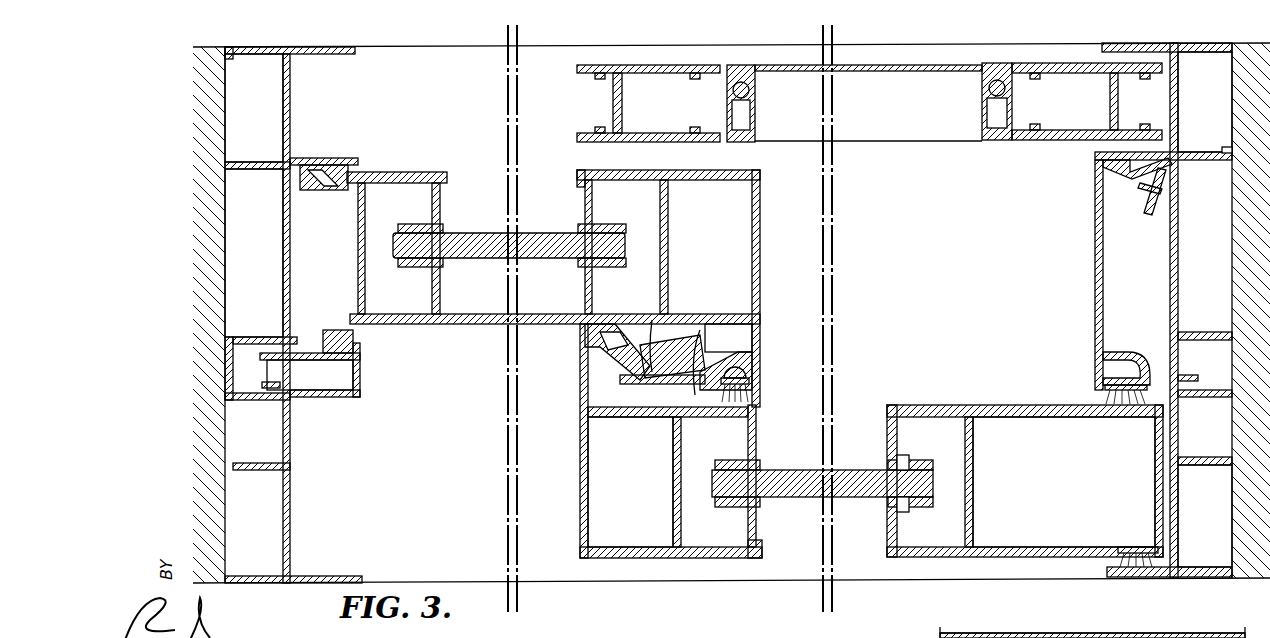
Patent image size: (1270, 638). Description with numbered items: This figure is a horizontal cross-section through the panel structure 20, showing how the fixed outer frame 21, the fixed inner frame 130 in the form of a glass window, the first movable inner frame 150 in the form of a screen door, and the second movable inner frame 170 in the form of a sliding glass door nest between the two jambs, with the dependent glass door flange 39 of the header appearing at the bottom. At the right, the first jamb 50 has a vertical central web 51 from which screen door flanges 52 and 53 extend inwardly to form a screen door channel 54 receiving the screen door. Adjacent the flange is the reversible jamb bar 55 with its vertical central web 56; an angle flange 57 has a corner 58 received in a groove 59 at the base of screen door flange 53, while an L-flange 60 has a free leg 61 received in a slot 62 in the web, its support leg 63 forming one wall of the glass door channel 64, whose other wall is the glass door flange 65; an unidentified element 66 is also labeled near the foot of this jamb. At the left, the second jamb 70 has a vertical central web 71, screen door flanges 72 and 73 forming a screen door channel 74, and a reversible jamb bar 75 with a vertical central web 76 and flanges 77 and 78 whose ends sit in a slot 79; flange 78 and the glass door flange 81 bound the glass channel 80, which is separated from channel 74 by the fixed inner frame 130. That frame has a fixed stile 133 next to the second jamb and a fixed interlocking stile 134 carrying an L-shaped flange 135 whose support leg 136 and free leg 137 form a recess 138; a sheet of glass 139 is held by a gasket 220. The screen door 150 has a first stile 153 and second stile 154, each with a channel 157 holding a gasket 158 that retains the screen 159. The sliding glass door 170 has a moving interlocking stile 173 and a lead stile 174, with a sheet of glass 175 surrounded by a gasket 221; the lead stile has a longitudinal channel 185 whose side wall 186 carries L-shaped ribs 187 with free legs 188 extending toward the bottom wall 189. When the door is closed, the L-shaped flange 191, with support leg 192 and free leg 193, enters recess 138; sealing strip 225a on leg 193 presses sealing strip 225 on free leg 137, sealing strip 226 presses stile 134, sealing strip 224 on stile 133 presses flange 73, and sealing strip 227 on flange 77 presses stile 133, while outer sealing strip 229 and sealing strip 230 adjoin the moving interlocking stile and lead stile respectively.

The panel structure 20 is at (172, 57).
The fixed outer frame 21 is at (212, 110).
The dependent glass door flange 39 is at (1055, 633).
The first jamb 50 is at (1225, 580).
The vertical central web 51 is at (1178, 268).
The screen door flange 52 is at (1143, 47).
The screen door flange 53 is at (1122, 156).
The screen door channel 54 is at (1155, 110).
The reversible jamb bar 55 is at (1093, 278).
The vertical central web 56 is at (1102, 250).
The angle flange 57 is at (1162, 190).
The corner 58 is at (1172, 170).
The groove 59 is at (1183, 155).
The L-flange 60 is at (1160, 358).
The free leg 61 is at (1180, 366).
The slot 62 is at (1190, 340).
The support leg 63 is at (1180, 402).
The glass door channel 64 is at (1172, 513).
The glass door flange 65 is at (1117, 579).
The sill flange 66 is at (1167, 579).
The second jamb 70 is at (225, 397).
The vertical central web 71 is at (283, 243).
The screen door flange 72 is at (327, 54).
The screen door flange 73 is at (338, 163).
The screen door channel 74 is at (315, 103).
The reversible jamb bar 75 is at (345, 402).
The vertical central web 76 is at (362, 372).
The flange 77 is at (310, 375).
The flange 78 is at (315, 385).
The slot 79 is at (268, 338).
The glass channel 80 is at (320, 510).
The glass door flange 81 is at (338, 578).
The fixed inner frame 130 is at (778, 258).
The fixed stile 133 is at (390, 174).
The fixed interlocking stile 134 is at (762, 176).
The L-shaped flange 135 is at (765, 358).
The support leg 136 is at (762, 330).
The free leg 137 is at (635, 392).
The recess 138 is at (735, 335).
The sheet of glass 139 is at (553, 245).
The first movable inner frame 150 is at (955, 145).
The first stile 153 is at (1055, 141).
The second stile 154 is at (666, 143).
The channel 157 is at (730, 92).
The gasket 158 is at (757, 92).
The screen 159 is at (875, 72).
The second movable inner frame 170 is at (720, 567).
The moving interlocking stile 173 is at (603, 482).
The lead stile 174 is at (1030, 557).
The sheet of glass 175 is at (848, 494).
The longitudinal channel 185 is at (945, 465).
The side wall 186 is at (940, 408).
The longitudinal rib 187 is at (887, 430).
The free leg 188 is at (905, 455).
The bottom wall 189 is at (975, 512).
The L-shaped flange 191 is at (560, 385).
The support leg 192 is at (585, 358).
The free leg 193 is at (677, 343).
The gasket 220 is at (448, 268).
The gasket 221 is at (765, 505).
The sealing strip 224 is at (306, 192).
The sealing strip 225 is at (693, 395).
The sealing strip 225a is at (652, 320).
The sealing strip 226 is at (585, 330).
The sealing strip 227 is at (355, 343).
The outer sealing strip 229 is at (757, 398).
The sealing strip 230 is at (1103, 398).